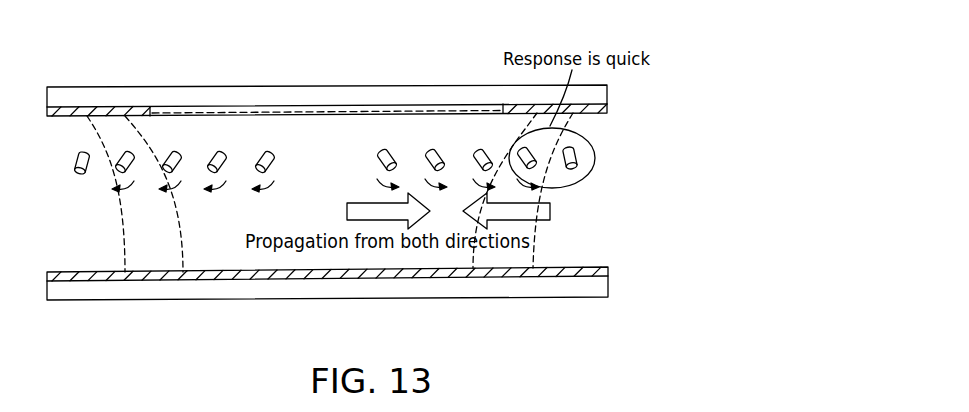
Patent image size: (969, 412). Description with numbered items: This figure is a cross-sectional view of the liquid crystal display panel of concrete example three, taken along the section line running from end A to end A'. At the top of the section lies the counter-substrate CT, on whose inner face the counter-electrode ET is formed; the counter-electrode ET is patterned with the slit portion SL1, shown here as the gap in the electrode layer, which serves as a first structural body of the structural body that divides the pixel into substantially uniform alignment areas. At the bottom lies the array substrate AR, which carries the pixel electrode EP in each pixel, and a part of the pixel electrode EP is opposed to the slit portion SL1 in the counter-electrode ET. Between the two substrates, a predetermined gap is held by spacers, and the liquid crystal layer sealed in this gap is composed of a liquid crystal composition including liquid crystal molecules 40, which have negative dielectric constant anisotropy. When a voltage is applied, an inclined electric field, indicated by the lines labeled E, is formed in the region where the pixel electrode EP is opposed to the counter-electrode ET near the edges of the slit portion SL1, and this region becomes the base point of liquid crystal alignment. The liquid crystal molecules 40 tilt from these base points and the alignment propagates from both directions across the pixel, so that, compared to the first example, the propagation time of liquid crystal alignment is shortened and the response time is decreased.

The liquid crystal molecules 40 is at (70, 163).
The electric field lines E is at (120, 224).
The counter-substrate CT is at (445, 85).
The counter-electrode ET is at (607, 108).
The slit portion SL1 is at (305, 110).
The array substrate AR is at (340, 300).
The pixel electrode EP is at (431, 278).
The line A-A' A is at (36, 310).
The line A- A' is at (621, 306).